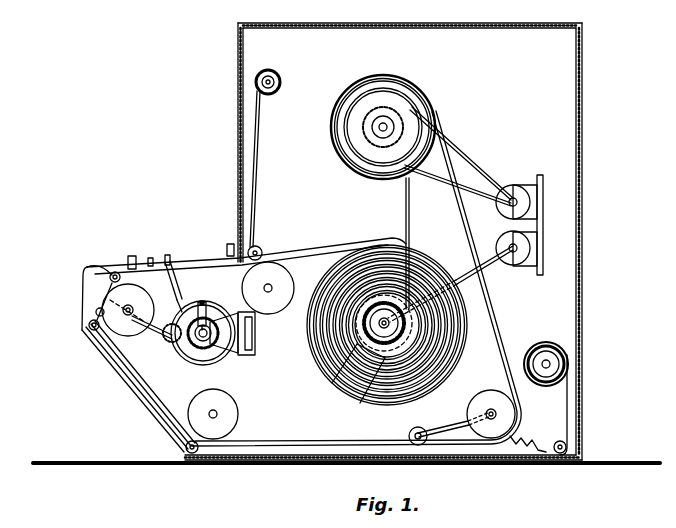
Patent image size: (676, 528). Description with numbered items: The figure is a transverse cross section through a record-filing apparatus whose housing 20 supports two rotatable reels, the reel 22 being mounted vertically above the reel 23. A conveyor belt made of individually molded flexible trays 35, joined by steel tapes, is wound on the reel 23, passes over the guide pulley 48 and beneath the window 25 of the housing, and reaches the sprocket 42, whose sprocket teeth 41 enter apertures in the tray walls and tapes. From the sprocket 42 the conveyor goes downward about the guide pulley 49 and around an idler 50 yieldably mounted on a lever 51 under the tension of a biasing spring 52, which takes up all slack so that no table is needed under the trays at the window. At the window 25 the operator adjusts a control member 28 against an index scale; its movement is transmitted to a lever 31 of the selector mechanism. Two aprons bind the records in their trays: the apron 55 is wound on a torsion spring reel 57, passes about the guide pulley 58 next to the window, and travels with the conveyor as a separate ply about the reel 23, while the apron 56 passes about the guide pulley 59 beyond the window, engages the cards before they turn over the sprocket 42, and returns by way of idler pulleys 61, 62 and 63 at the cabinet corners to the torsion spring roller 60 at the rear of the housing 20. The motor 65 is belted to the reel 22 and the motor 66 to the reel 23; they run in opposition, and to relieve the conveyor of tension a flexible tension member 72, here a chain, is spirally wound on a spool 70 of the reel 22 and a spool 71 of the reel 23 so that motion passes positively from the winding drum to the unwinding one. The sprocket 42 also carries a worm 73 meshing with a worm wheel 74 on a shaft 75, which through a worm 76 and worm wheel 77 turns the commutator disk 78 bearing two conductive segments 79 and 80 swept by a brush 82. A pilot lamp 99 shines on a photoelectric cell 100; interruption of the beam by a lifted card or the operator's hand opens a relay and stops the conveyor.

The housing 20 is at (240, 103).
The reel 22 is at (405, 114).
The reel 23 is at (334, 376).
The window 25 is at (150, 262).
The control member 28 is at (170, 258).
The lever 31 is at (178, 276).
The trays 35 is at (466, 214).
The sprocket teeth 41 is at (134, 307).
The sprocket 42 is at (160, 331).
The guide pulley 48 is at (284, 286).
The guide pulley 49 is at (228, 418).
The idler 50 is at (484, 407).
The lever 51 is at (452, 425).
The biasing spring 52 is at (516, 443).
The apron 55 is at (254, 200).
The apron 56 is at (150, 410).
The torsion spring reel 57 is at (260, 80).
The guide pulley 58 is at (258, 250).
The guide pulley 59 is at (110, 266).
The torsion spring roller 60 is at (568, 365).
The idler pulley 61 is at (567, 446).
The idler pulley 62 is at (184, 447).
The idler pulley 63 is at (88, 328).
The motor 65 is at (518, 188).
The motor 66 is at (515, 267).
The spool 70 is at (348, 162).
The spool 71 is at (360, 390).
The flexible tension member 72 is at (406, 206).
The worm 73 is at (95, 301).
The worm wheel 74 is at (90, 316).
The shaft 75 is at (178, 342).
The worm 76 is at (199, 364).
The worm wheel 77 is at (228, 358).
The commutator disk 78 is at (210, 306).
The electrically conductive segment 79 is at (199, 304).
The electrically conductive segment 80 is at (240, 316).
The brush 82 is at (207, 308).
The pilot lamp 99 is at (132, 256).
The photoelectric cell 100 is at (230, 246).